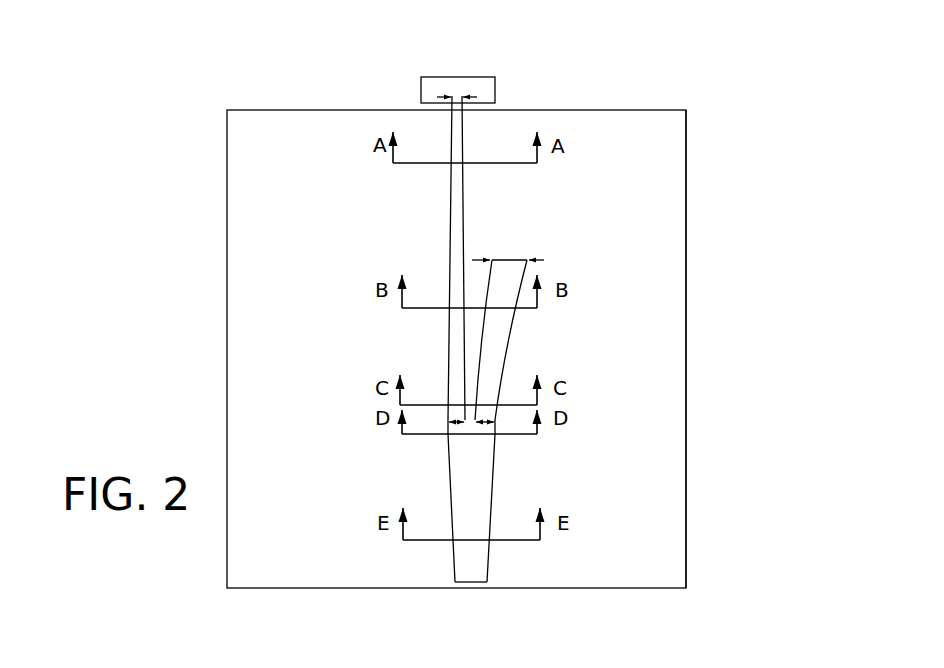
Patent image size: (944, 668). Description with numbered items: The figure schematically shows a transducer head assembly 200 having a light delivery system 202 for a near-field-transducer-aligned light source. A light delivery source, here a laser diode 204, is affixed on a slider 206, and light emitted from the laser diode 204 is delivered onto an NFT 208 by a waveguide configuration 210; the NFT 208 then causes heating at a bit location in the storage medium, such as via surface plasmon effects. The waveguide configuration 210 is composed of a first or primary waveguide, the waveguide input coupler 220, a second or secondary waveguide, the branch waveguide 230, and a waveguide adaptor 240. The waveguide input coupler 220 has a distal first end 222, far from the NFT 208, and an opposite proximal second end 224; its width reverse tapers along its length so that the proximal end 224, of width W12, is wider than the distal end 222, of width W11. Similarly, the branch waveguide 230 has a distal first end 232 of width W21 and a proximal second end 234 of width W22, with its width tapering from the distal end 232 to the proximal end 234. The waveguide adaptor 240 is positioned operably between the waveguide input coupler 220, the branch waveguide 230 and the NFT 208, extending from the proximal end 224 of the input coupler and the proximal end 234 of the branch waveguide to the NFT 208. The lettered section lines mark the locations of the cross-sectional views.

The transducer head assembly 200 is at (176, 86).
The light delivery system 202 is at (494, 196).
The laser diode 204 is at (494, 77).
The slider 206 is at (684, 147).
The NFT 208 is at (470, 590).
The waveguide configuration 210 is at (449, 187).
The waveguide input coupler 220 is at (450, 223).
The first end of waveguide input coupler 222 is at (450, 111).
The second end of waveguide input coupler 224 is at (448, 420).
The branch waveguide 230 is at (507, 332).
The first end of branch waveguide 232 is at (493, 262).
The second end of branch waveguide 234 is at (497, 420).
The waveguide adaptor 240 is at (773, 515).
The width of distal end of waveguide input coupler W11 is at (457, 85).
The width of proximal end of waveguide input coupler W12 is at (447, 436).
The width of distal end of branch waveguide W21 is at (526, 263).
The width of proximal end of branch waveguide W22 is at (494, 437).